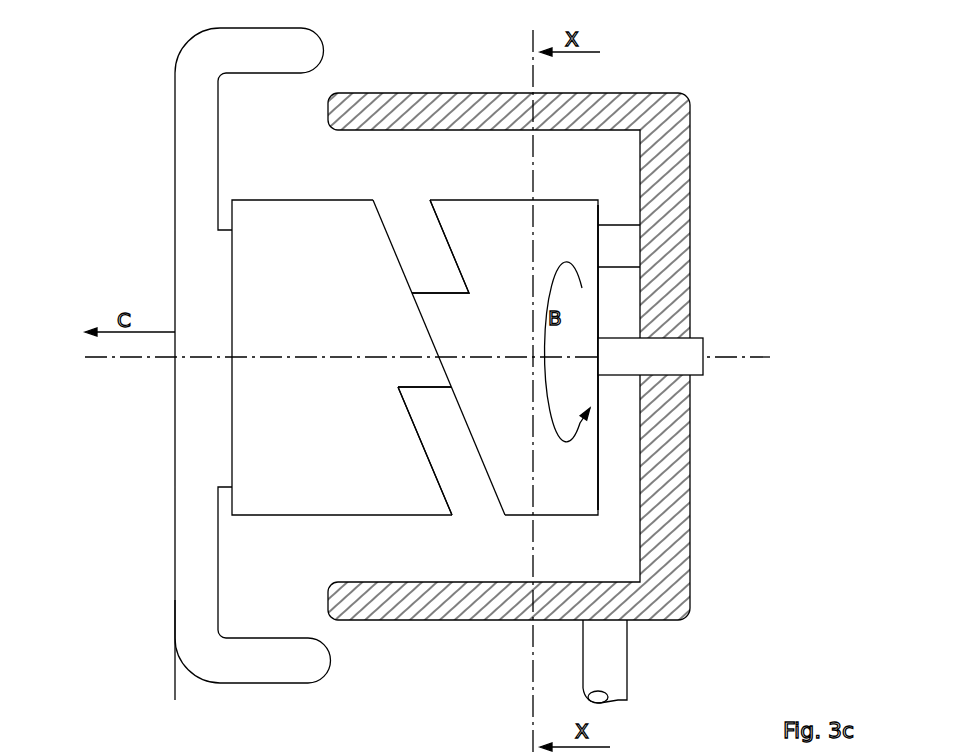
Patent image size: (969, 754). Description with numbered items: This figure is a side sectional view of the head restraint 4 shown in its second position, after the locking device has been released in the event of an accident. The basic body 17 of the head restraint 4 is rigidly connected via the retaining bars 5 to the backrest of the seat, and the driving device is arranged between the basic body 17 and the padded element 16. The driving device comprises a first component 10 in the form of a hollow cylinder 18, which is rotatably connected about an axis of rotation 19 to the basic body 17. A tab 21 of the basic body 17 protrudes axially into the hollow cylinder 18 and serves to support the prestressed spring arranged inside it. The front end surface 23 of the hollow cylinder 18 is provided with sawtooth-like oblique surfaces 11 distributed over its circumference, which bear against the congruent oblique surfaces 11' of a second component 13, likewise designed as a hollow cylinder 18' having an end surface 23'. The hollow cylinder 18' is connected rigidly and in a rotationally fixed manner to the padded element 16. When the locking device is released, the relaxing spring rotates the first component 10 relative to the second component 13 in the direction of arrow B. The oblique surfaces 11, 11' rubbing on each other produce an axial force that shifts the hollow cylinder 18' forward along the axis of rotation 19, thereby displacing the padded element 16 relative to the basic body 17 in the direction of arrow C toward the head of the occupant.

The head restraint 4 is at (108, 354).
The retaining bars 5 is at (607, 672).
The first component 10 is at (570, 498).
The oblique surfaces 11 is at (463, 146).
The oblique surfaces 11' is at (397, 257).
The second component 13 is at (248, 445).
The padded element 16 is at (195, 557).
The basic body 17 is at (653, 115).
The hollow cylinder 18 is at (539, 357).
The hollow cylinder 18' is at (399, 357).
The axis of rotation 19 is at (725, 358).
The tab 21 is at (620, 245).
The front end surface 23 is at (463, 146).
The end surface 23' is at (397, 257).